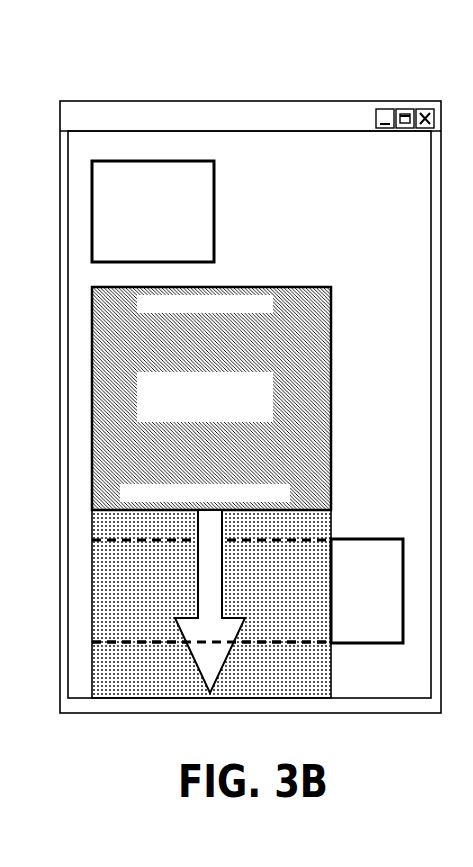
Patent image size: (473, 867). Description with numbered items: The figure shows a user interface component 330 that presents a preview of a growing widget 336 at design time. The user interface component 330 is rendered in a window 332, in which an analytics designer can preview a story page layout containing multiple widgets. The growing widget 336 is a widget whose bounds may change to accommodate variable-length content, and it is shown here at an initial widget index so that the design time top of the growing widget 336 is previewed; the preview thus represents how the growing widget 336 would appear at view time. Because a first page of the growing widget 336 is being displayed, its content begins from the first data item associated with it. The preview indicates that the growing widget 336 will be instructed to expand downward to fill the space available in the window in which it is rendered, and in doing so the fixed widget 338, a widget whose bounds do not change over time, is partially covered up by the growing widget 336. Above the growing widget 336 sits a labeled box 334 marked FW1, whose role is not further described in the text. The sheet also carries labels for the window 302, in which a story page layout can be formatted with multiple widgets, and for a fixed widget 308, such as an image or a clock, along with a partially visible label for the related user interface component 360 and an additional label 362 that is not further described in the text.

The user interface component 330 is at (372, 53).
The window 332 is at (389, 170).
The first widget FW1 334 is at (100, 187).
The growing widget 336 is at (102, 305).
The fixed widget 338 is at (390, 592).
The window 302 is at (0, 276).
The fixed widget 308 is at (0, 583).
The user interface component 360 is at (464, 196).
The right-side element 362 is at (464, 321).